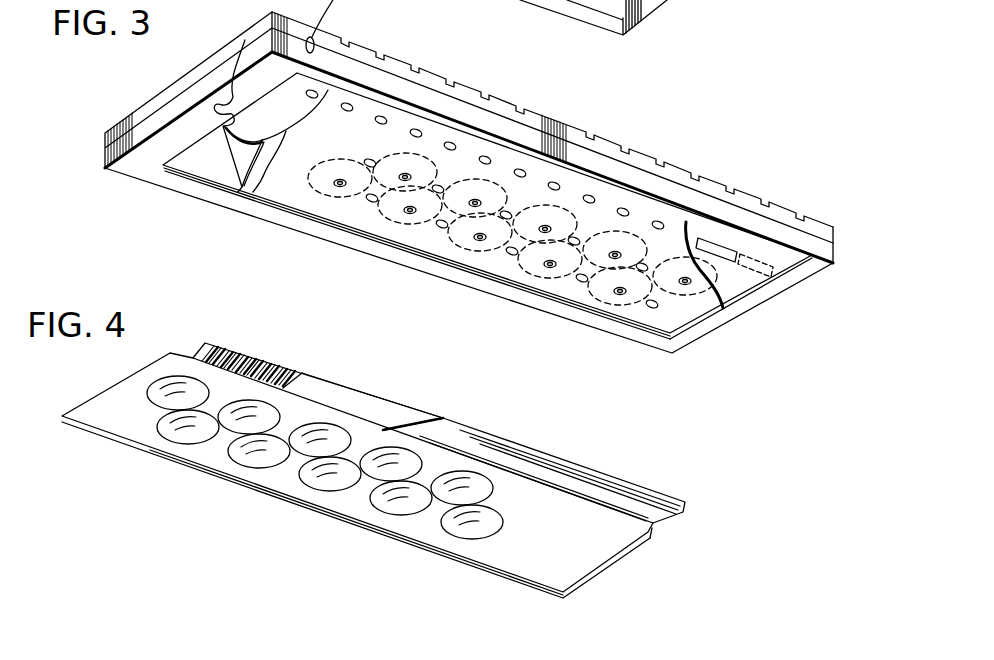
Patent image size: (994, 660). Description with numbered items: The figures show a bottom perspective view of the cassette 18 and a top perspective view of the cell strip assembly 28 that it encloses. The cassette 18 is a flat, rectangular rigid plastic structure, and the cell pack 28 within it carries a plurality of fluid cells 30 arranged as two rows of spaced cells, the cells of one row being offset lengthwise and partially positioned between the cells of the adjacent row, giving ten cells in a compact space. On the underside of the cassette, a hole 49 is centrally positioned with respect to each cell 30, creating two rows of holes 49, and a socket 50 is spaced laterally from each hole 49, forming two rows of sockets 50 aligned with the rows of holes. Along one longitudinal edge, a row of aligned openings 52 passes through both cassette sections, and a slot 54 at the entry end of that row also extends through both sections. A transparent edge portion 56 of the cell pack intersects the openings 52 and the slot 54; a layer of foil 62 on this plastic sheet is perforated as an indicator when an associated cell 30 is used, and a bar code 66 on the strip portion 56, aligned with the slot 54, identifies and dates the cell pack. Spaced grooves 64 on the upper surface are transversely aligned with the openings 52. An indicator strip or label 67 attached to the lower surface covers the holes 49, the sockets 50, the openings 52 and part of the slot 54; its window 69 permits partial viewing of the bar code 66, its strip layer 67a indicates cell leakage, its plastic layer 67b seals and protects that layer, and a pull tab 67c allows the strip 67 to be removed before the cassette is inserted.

In FIG. 3, the cassette 18 is at (200, 212).
In FIG. 4, the cell strip assembly 28 is at (87, 409).
In FIG. 3, the fluid cell 30 is at (432, 250).
In FIG. 4, the fluid cell 30 is at (237, 455).
In FIG. 3, the hole 49 is at (338, 180).
In FIG. 3, the socket 50 is at (368, 160).
In FIG. 3, the opening 52 is at (318, 91).
In FIG. 3, the slot 54 is at (712, 236).
In FIG. 4, the transparent edge portion 56 is at (207, 343).
In FIG. 4, the layer of foil 62 is at (362, 397).
In FIG. 3, the groove 64 is at (417, 66).
In FIG. 4, the bar code 66 is at (240, 368).
In FIG. 3, the indicator strip 67 is at (263, 188).
In FIG. 3, the strip layer 67a is at (190, 163).
In FIG. 3, the plastic layer 67b is at (233, 83).
In FIG. 3, the pull tab 67c is at (213, 114).
In FIG. 3, the window 69 is at (730, 267).